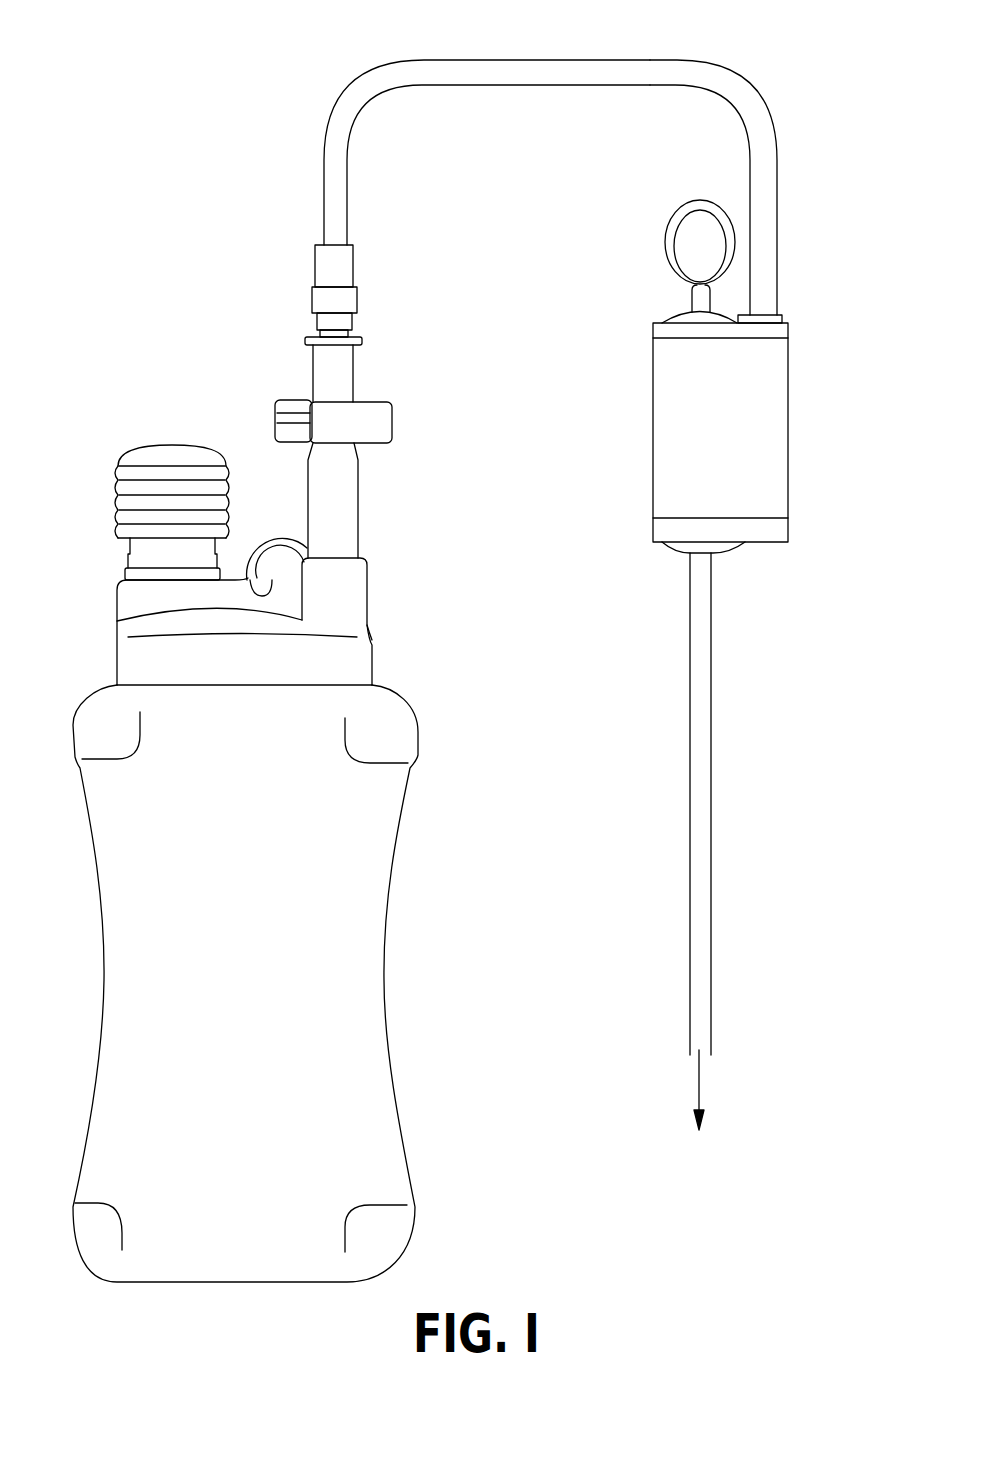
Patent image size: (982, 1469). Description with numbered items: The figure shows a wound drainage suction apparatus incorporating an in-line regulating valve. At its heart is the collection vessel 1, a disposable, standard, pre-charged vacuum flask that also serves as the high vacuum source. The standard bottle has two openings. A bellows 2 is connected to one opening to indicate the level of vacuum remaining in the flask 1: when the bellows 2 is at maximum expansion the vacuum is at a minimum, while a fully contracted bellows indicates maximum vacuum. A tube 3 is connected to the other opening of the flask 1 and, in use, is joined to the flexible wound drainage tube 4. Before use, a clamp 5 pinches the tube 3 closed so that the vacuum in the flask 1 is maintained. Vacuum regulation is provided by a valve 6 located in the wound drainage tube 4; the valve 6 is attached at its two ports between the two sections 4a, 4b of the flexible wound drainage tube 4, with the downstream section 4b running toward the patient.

The collection vessel 1 is at (383, 955).
The bellows 2 is at (117, 485).
The tube 3 is at (359, 497).
The flexible wound drainage tube 4 is at (610, 60).
The section of the flexible wound drainage tube 4a is at (687, 95).
The section of the flexible wound drainage tube 4b is at (688, 651).
The clamp 5 is at (392, 402).
The valve 6 is at (790, 417).